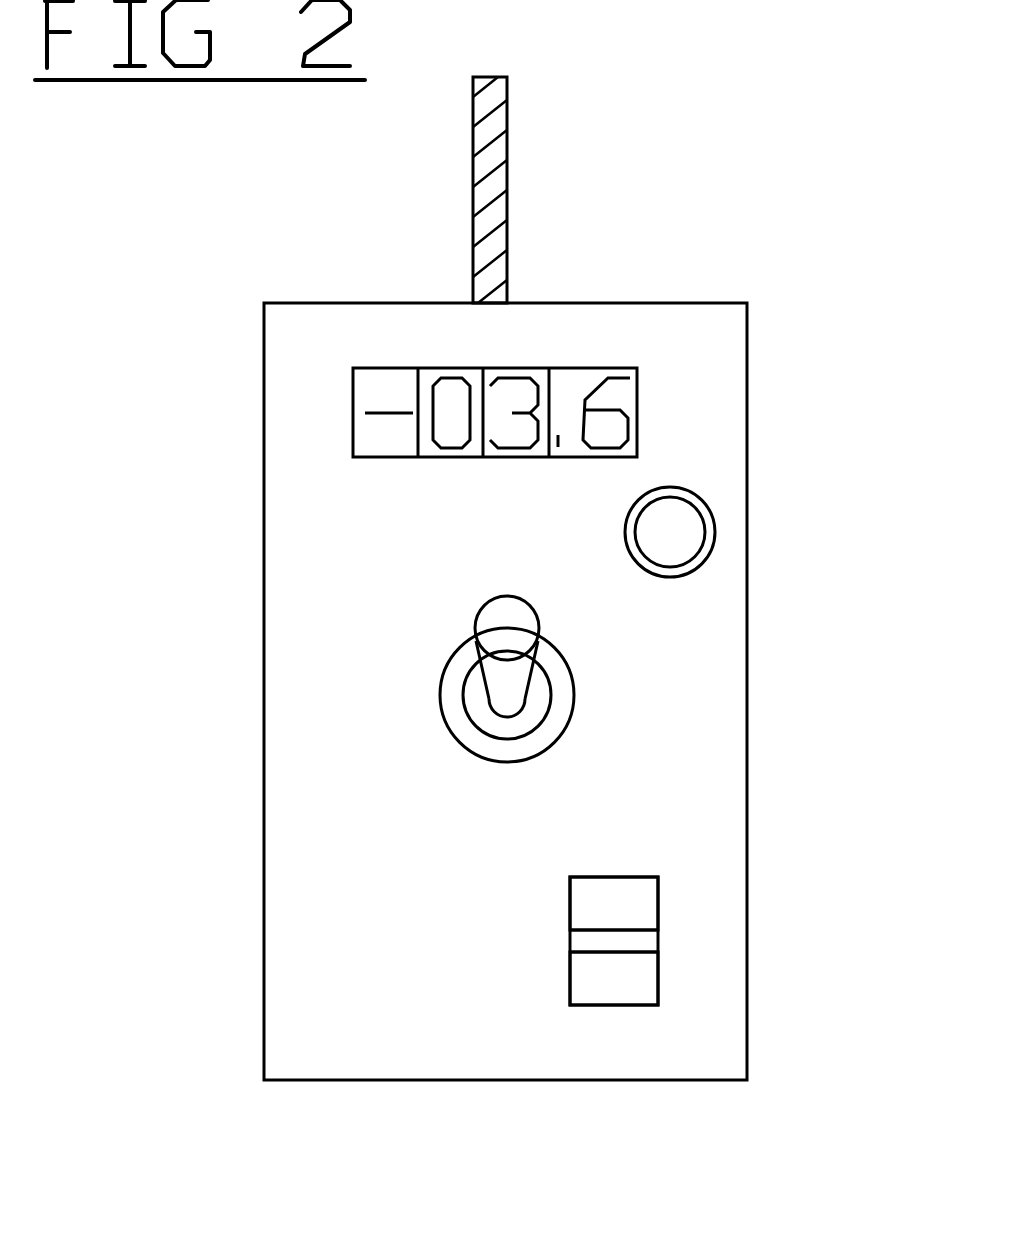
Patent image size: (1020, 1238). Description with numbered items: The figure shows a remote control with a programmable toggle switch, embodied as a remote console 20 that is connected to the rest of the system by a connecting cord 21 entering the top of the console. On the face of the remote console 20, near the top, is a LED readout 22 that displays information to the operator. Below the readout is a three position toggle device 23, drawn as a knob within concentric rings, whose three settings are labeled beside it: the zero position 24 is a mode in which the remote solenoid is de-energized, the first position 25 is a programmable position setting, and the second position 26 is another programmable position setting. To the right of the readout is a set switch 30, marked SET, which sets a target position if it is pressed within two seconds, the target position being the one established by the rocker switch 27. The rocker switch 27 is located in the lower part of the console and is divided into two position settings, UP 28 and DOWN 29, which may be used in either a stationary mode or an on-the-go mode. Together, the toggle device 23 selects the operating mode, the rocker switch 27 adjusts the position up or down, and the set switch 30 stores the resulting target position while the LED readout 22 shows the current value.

The remote console 20 is at (373, 227).
The connecting cord 21 is at (508, 238).
The LED readout 22 is at (352, 435).
The three position toggle device 23 is at (565, 668).
The position (0) 24 is at (393, 790).
The position (1) 25 is at (393, 692).
The position (2) 26 is at (393, 617).
The rocker switch 27 is at (672, 907).
The UP position 28 is at (570, 977).
The DOWN position 29 is at (570, 910).
The set switch 30 is at (707, 505).